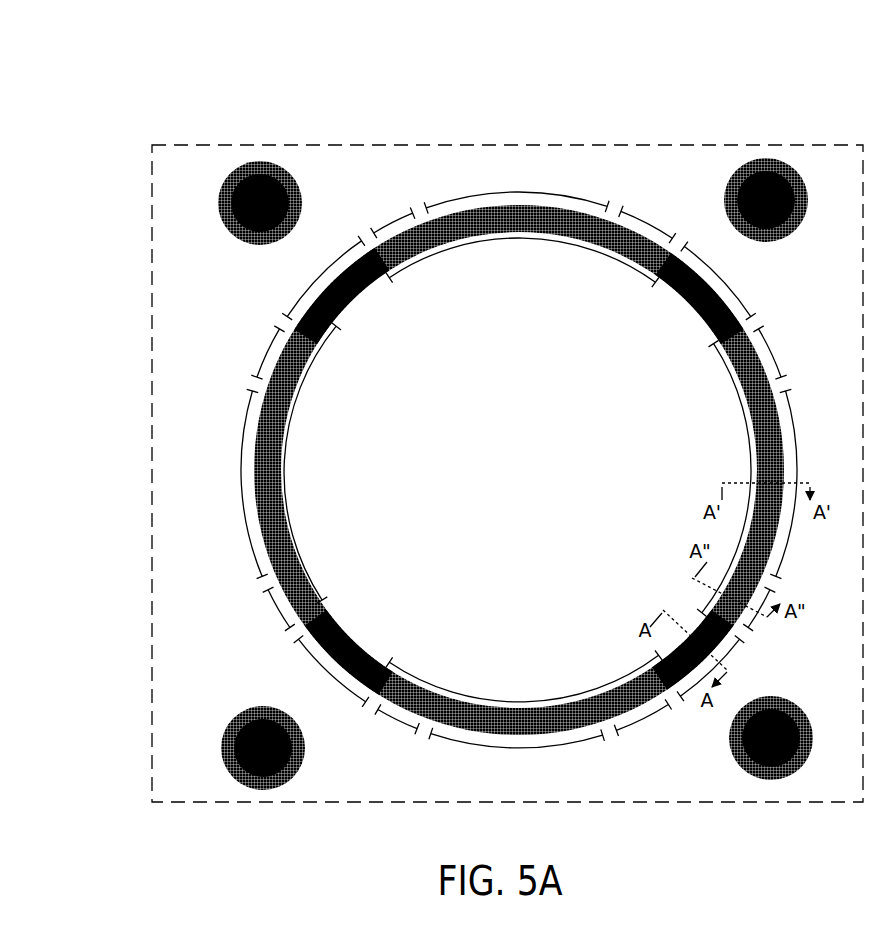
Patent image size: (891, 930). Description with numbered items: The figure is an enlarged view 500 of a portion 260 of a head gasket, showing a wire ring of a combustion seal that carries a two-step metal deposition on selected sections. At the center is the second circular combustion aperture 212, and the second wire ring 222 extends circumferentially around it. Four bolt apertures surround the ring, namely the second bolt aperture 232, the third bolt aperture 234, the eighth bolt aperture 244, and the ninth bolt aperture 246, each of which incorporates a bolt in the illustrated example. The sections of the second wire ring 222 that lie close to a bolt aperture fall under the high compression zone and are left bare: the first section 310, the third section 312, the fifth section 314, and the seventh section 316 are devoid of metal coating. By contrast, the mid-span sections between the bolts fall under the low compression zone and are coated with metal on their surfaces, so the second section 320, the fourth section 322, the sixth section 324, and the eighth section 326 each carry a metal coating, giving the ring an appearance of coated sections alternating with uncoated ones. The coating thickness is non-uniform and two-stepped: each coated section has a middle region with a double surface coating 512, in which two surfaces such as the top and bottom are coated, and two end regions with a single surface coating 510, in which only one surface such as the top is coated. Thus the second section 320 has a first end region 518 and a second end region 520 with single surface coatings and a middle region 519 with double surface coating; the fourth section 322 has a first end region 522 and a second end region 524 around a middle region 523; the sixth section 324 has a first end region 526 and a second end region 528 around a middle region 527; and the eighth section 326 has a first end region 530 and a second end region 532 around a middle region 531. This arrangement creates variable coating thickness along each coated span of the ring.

The enlarged view 500 is at (138, 82).
The portion 260 is at (150, 373).
The second circular combustion aperture 212 is at (503, 491).
The second wire ring 222 is at (590, 182).
The second bolt aperture 232 is at (222, 196).
The third bolt aperture 234 is at (808, 196).
The eighth bolt aperture 244 is at (802, 710).
The ninth bolt aperture 246 is at (232, 728).
The first section 310 is at (299, 296).
The third section 312 is at (736, 292).
The fifth section 314 is at (727, 652).
The seventh section 316 is at (305, 658).
The second section 320 is at (519, 240).
The fourth section 322 is at (738, 447).
The sixth section 324 is at (531, 703).
The eighth section 326 is at (290, 447).
The single surface coating 510 is at (304, 356).
The double surface coating 512 is at (255, 437).
The first end region 518 is at (384, 228).
The middle region 519 is at (497, 193).
The second end region 520 is at (660, 228).
The first end region 522 is at (768, 362).
The middle region 523 is at (797, 440).
The second end region 524 is at (768, 592).
The first end region 526 is at (657, 718).
The middle region 527 is at (515, 748).
The second end region 528 is at (397, 720).
The first end region 530 is at (272, 607).
The middle region 531 is at (240, 497).
The second end region 532 is at (262, 358).